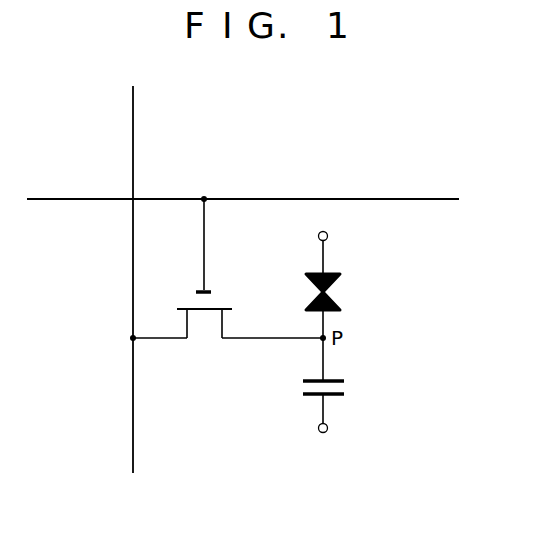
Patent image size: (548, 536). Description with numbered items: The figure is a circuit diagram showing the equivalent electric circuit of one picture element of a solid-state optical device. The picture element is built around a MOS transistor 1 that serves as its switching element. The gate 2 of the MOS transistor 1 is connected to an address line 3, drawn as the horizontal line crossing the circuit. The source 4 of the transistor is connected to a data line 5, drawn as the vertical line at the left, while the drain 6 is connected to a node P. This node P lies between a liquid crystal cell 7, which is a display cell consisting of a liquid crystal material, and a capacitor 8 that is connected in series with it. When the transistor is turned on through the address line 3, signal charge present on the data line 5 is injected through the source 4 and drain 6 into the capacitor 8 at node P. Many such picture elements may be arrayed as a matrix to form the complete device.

The MOS transistor 1 is at (226, 305).
The gate 2 is at (198, 290).
The address line 3 is at (415, 198).
The source 4 is at (182, 344).
The data line 5 is at (133, 133).
The drain 6 is at (218, 344).
The liquid crystal cell 7 is at (343, 290).
The capacitor 8 is at (338, 402).